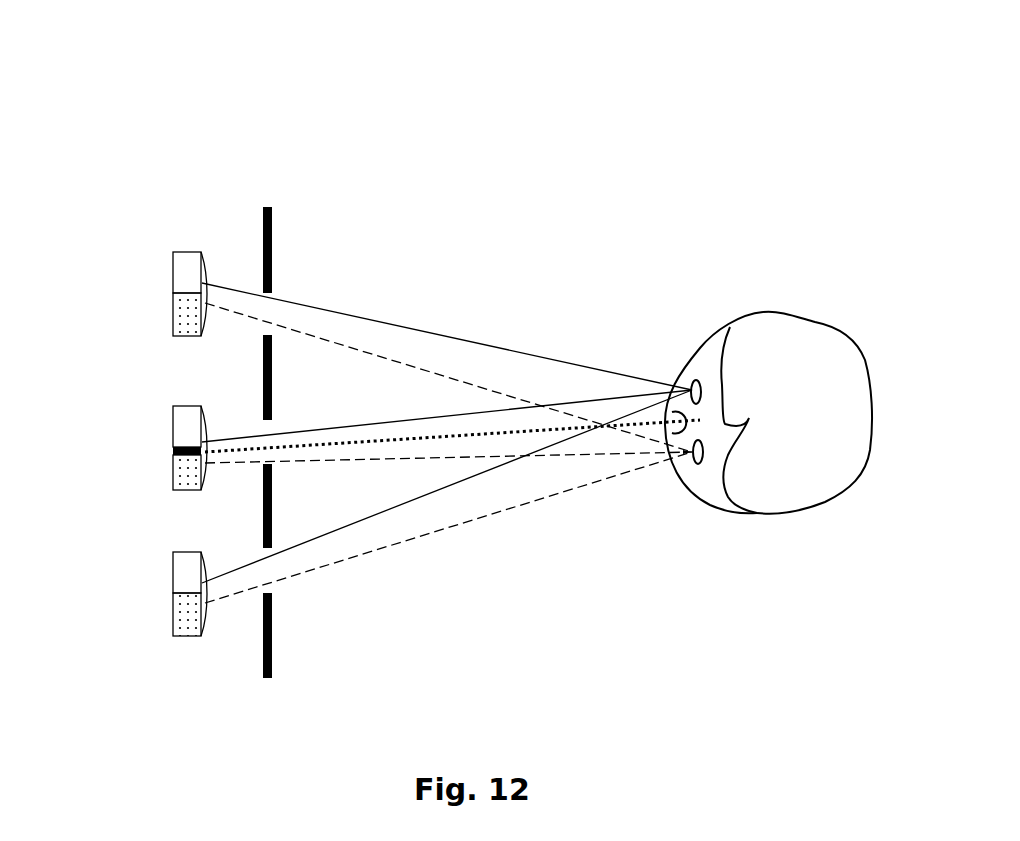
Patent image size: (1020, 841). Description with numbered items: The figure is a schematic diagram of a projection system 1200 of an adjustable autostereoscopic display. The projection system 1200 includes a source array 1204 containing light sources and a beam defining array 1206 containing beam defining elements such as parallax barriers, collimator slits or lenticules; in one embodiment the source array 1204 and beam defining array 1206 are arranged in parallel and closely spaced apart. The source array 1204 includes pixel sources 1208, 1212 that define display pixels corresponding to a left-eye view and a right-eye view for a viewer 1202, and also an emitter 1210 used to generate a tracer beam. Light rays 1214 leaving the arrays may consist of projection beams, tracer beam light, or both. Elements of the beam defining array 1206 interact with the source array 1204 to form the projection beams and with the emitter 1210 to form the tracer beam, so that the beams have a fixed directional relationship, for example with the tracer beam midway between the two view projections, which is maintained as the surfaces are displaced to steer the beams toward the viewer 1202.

The projection system 1200 is at (124, 77).
The viewer 1202 is at (817, 323).
The source array 1204 is at (170, 224).
The beam defining array 1206 is at (267, 192).
The pixel source 1208 is at (173, 423).
The emitter 1210 is at (173, 451).
The pixel source 1212 is at (173, 480).
The light rays 1214 is at (525, 315).